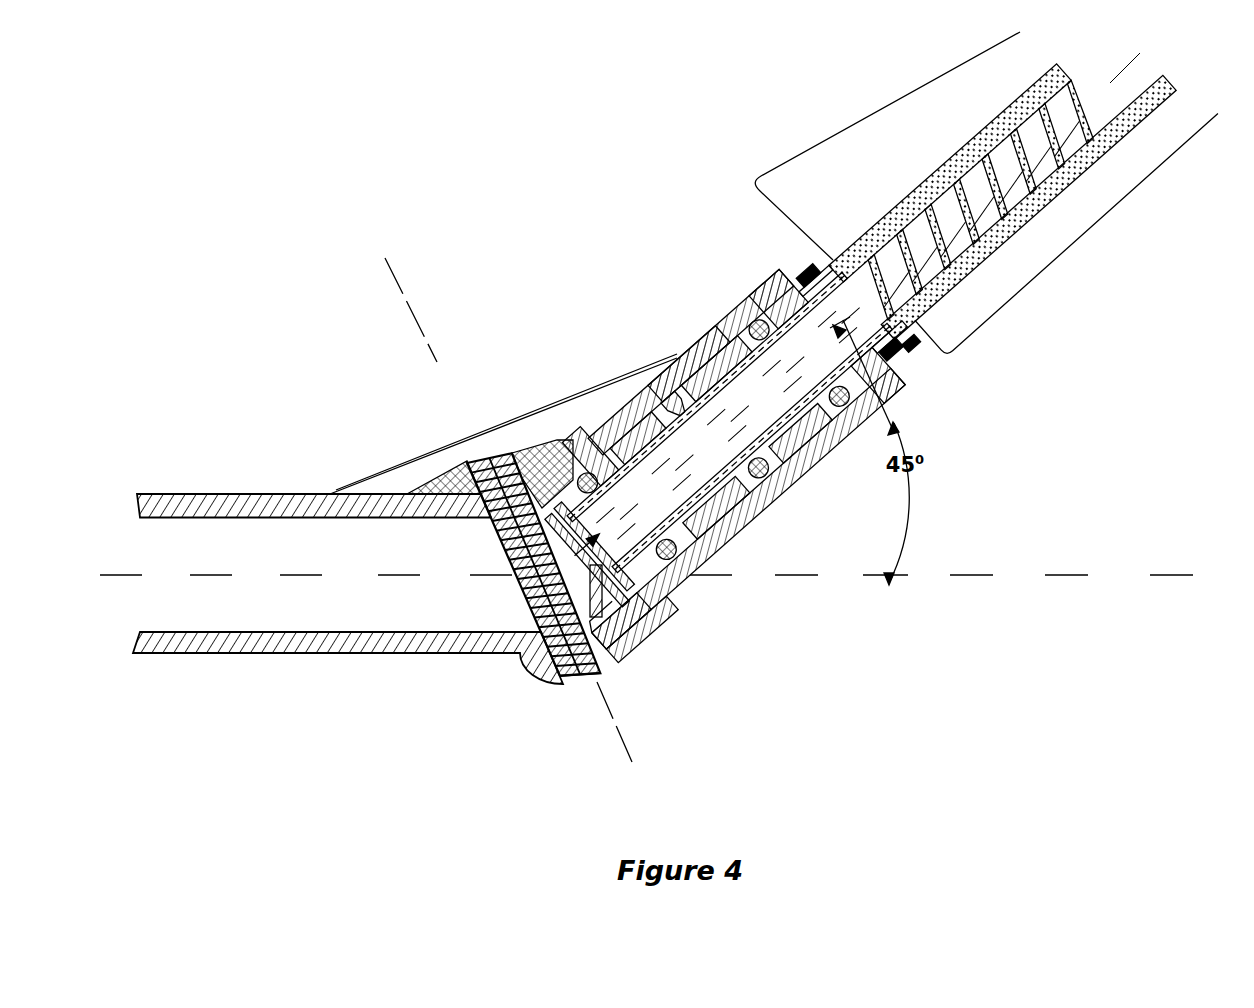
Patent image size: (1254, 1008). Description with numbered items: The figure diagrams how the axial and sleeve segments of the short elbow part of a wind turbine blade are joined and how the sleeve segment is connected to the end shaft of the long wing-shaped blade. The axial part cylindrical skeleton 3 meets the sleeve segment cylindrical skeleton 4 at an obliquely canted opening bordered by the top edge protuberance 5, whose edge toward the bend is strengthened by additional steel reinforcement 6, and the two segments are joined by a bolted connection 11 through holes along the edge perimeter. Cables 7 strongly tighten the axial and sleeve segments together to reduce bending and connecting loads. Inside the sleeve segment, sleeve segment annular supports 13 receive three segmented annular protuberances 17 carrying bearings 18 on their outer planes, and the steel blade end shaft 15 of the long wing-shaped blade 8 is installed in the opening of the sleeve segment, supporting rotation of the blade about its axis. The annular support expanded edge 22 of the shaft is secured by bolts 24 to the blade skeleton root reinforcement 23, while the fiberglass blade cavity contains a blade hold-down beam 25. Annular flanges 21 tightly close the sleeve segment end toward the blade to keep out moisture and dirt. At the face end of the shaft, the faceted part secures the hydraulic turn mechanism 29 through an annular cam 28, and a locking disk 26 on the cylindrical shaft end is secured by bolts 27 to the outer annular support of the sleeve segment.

The axial part cylindrical skeleton 3 is at (308, 653).
The sleeve segment cylindrical skeleton 4 is at (783, 493).
The top edge protuberance 5 is at (500, 452).
The additional steel reinforcement 6 is at (438, 477).
The cables 7 is at (556, 398).
The long wing-shaped blade 8 is at (1127, 163).
The bolted connection 11 is at (591, 680).
The sleeve segment annular supports 13 is at (688, 383).
The blade end shaft 15 is at (790, 427).
The segmented annular protuberances 17 is at (876, 400).
The bearings 18 is at (740, 330).
The annular flanges 21 is at (800, 270).
The annular support expanded edge 22 is at (913, 355).
The blade skeleton root reinforcement 23 is at (920, 340).
The bolts 24 is at (815, 268).
The blade hold-down beam 25 is at (1140, 107).
The locking disk 26 is at (647, 618).
The bolts 27 is at (571, 440).
The annular cam 28 is at (668, 595).
The hydraulic turn mechanism 29 is at (622, 653).